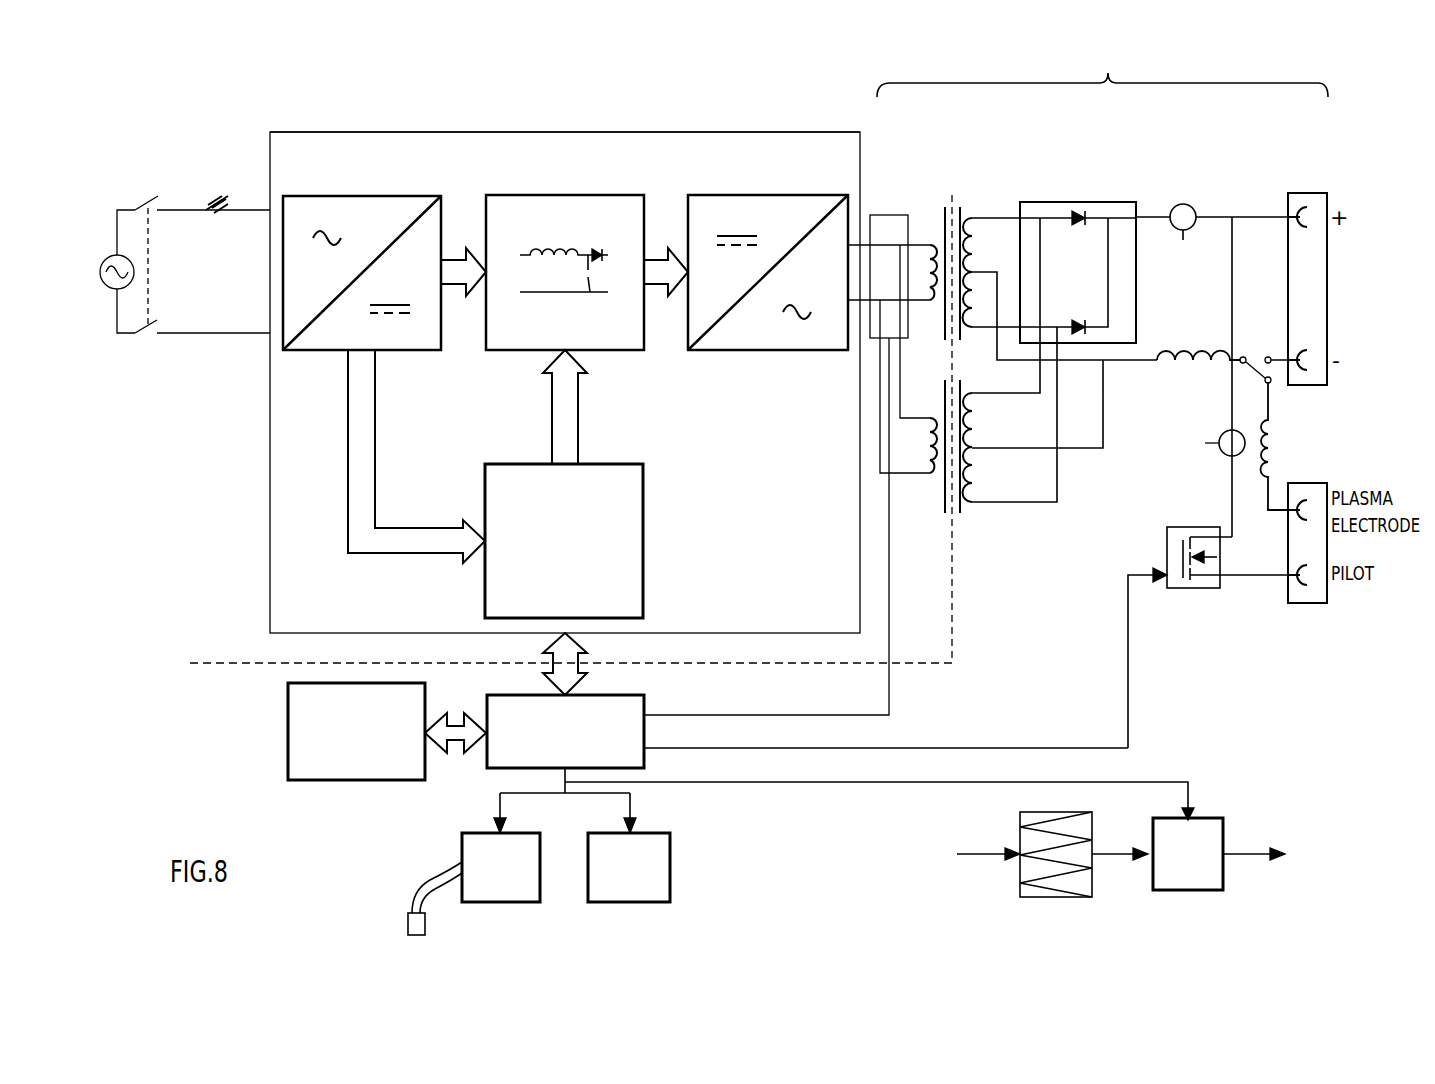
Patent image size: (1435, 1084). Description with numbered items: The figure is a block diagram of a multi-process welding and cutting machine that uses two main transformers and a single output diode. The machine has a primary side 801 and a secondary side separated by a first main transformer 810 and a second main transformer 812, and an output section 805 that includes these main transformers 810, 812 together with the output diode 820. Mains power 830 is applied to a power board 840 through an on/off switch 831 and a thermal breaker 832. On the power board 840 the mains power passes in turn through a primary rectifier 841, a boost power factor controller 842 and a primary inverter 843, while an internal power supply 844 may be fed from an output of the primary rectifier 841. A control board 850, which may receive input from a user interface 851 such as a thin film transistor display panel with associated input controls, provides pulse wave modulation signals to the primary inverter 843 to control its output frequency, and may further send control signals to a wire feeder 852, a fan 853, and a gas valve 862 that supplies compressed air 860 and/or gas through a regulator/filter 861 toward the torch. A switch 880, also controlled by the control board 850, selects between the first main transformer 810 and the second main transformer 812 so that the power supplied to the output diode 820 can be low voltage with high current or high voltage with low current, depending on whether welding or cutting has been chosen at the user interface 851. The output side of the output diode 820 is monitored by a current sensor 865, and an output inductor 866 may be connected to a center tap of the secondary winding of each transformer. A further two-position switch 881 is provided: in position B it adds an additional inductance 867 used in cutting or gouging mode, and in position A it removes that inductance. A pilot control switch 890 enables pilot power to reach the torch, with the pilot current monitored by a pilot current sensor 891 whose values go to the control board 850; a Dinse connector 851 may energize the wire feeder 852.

The primary side 801 is at (565, 115).
The output section 805 is at (1102, 85).
The first main transformer 810 is at (985, 148).
The second main transformer 812 is at (1020, 592).
The output diode 820 is at (1140, 275).
The mains power 830 is at (105, 286).
The on/off switch 831 is at (150, 135).
The thermal breaker 832 is at (214, 135).
The power board 840 is at (270, 580).
The primary rectifier 841 is at (325, 352).
The boost power factor controller (PFC) 842 is at (525, 352).
The primary inverter 843 is at (745, 352).
The internal power supply 844 is at (515, 462).
The control board 850 is at (647, 700).
The user interface 851 is at (408, 925).
The wire feeder 852 is at (466, 903).
The fan 853 is at (640, 902).
The compressed air 860 is at (900, 882).
The regulator/filter 861 is at (1092, 826).
The gas valve 862 is at (1223, 835).
The current sensor 865 is at (1210, 150).
The output inductor 866 is at (1180, 295).
The additional inductance 867 is at (1280, 447).
The switch 880 is at (885, 205).
The switch SW1 881 is at (1256, 305).
The pilot control switch 890 is at (1197, 590).
The pilot current sensor 891 is at (1130, 465).